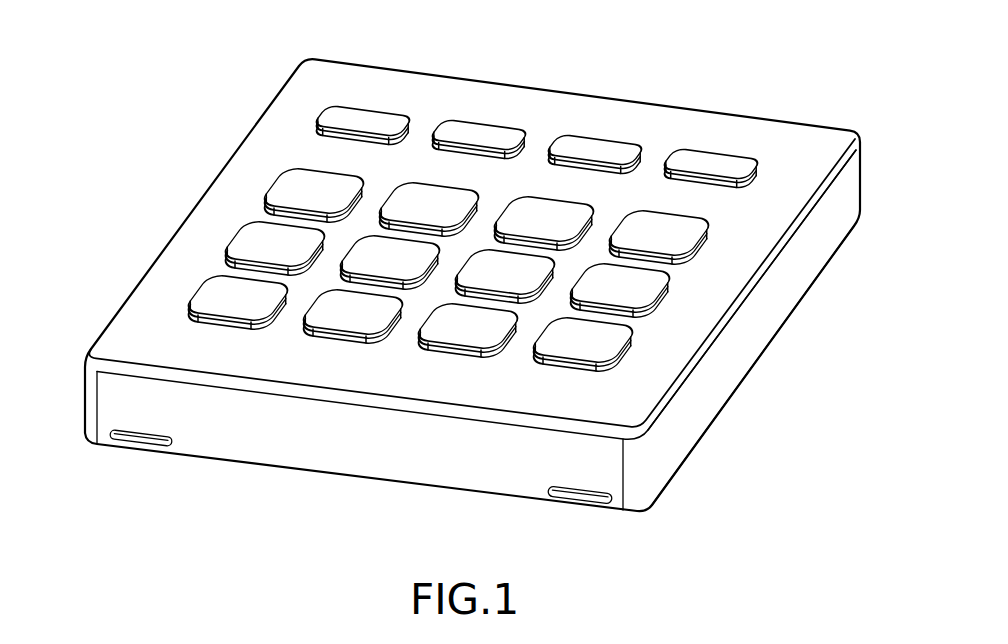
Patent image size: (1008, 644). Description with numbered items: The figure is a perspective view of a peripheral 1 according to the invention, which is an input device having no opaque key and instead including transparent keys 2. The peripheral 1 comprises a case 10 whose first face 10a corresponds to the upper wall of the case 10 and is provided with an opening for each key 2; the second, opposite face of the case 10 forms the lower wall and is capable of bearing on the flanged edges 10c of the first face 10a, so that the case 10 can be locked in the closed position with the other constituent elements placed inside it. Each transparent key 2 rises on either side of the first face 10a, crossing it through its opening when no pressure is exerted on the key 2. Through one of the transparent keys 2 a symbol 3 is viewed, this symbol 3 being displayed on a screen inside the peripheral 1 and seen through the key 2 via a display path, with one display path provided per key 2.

The peripheral 1 is at (760, 76).
The case 10 is at (84, 359).
The first face 10a is at (823, 130).
The flanged edges 10c is at (708, 391).
The transparent key 2 is at (702, 240).
The symbol 3 is at (671, 224).